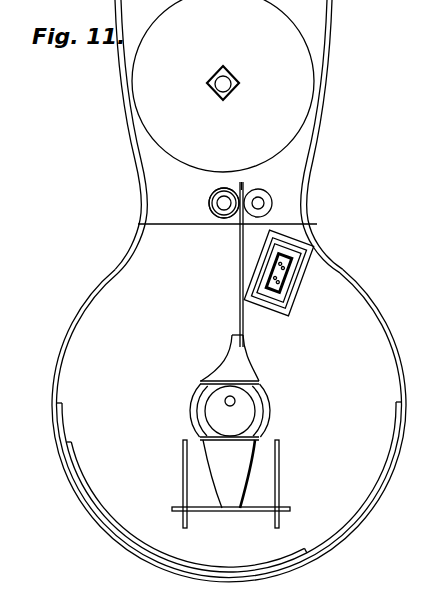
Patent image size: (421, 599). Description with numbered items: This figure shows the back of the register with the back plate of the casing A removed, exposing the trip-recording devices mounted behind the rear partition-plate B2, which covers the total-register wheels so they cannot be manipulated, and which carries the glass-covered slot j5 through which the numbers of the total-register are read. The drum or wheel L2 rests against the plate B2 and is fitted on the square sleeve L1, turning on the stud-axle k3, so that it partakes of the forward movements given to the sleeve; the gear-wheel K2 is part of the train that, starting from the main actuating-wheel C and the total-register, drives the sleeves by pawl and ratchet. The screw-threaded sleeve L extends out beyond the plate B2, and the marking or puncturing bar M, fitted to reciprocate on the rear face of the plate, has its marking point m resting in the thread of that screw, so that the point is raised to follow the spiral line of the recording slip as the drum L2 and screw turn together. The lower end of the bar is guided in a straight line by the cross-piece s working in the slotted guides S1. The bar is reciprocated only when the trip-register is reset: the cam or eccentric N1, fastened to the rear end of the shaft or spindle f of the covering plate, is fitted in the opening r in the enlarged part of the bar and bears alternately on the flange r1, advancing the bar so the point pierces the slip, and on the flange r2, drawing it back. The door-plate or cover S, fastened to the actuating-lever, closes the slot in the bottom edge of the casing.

The inclosing casing A is at (229, 291).
The drum or wheel L2 is at (223, 86).
The sleeve L1 is at (209, 85).
The stud-axle k3 is at (218, 103).
The gear-wheel K2 is at (218, 200).
The main actuating-wheel C is at (267, 203).
The screw-threaded sleeve L is at (217, 214).
The marking or puncturing bar M is at (225, 264).
The marking or puncturing point m is at (242, 186).
The glass-covered slot j5 is at (287, 268).
The rear partition-plate B2 is at (229, 425).
The flange r1 is at (229, 359).
The opening r is at (230, 412).
The weight N1 is at (230, 411).
The shaft or spindle f is at (225, 403).
The flange r2 is at (229, 474).
The cross-piece s is at (231, 518).
The slotted guides S1 is at (177, 484).
The door-plate or cover S is at (242, 583).